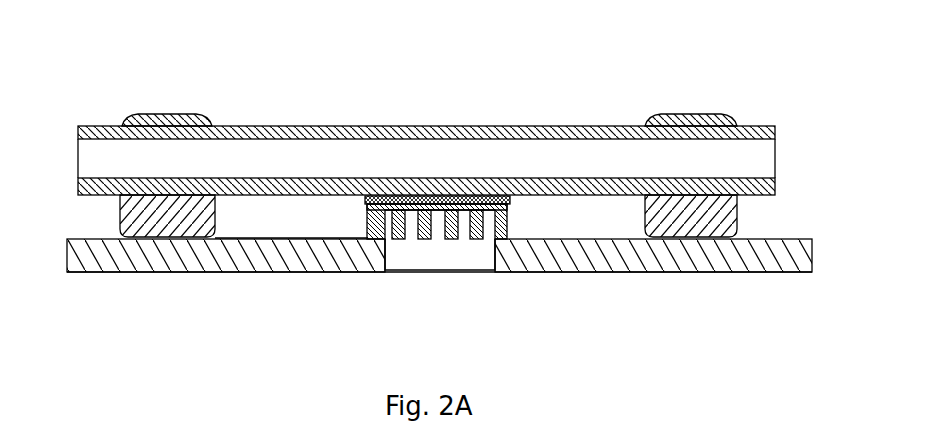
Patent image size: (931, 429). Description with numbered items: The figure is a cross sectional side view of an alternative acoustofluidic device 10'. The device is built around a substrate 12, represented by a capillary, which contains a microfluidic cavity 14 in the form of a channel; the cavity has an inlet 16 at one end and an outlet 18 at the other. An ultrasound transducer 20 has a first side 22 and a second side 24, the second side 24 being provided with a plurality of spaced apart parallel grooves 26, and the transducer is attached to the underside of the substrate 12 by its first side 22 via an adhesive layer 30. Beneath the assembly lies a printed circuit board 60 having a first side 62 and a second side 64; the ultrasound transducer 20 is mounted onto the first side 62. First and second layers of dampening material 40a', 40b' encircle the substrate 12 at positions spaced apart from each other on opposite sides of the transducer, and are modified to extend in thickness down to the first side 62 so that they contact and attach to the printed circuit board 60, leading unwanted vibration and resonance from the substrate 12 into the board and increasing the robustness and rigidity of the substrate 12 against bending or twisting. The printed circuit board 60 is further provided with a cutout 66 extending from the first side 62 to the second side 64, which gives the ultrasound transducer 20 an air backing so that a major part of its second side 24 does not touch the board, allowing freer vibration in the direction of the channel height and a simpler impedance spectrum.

The acoustofluidic device 10' is at (424, 182).
The substrate 12 is at (307, 126).
The microfluidic cavity 14 is at (460, 126).
The inlet 16 is at (78, 168).
The outlet 18 is at (777, 158).
The first layer of dampening material 40a' is at (144, 90).
The second layer of dampening material 40b' is at (665, 86).
The adhesive layer 30 is at (360, 198).
The first side 22 is at (510, 200).
The ultrasound transducer 20 is at (508, 225).
The second side 24 is at (477, 241).
The grooves 26 is at (442, 232).
The printed circuit board 60 is at (258, 255).
The first side 62 is at (285, 238).
The second side 64 is at (318, 262).
The cutout 66 is at (420, 252).